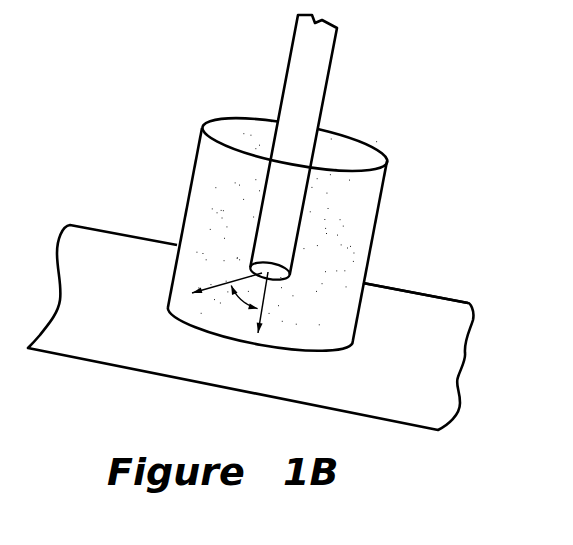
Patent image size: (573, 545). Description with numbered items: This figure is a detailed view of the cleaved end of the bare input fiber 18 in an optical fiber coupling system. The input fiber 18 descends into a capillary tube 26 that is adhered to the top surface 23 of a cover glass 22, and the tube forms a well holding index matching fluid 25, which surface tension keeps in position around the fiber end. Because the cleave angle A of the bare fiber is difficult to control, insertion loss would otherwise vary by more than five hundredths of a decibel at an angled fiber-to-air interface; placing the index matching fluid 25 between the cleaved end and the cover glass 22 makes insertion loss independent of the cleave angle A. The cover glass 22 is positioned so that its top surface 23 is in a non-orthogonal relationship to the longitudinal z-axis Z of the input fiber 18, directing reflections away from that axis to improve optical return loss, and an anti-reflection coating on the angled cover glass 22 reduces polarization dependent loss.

The bare input fiber 18 is at (317, 62).
The index matching fluid 25 is at (343, 148).
The capillary tube 26 is at (380, 200).
The top surface 23 is at (397, 303).
The cover glass 22 is at (418, 372).
The z-axis Z is at (270, 307).
The cleave angle A is at (227, 298).